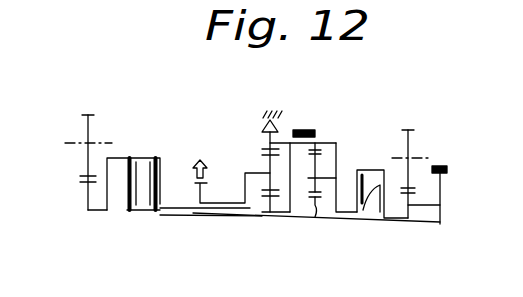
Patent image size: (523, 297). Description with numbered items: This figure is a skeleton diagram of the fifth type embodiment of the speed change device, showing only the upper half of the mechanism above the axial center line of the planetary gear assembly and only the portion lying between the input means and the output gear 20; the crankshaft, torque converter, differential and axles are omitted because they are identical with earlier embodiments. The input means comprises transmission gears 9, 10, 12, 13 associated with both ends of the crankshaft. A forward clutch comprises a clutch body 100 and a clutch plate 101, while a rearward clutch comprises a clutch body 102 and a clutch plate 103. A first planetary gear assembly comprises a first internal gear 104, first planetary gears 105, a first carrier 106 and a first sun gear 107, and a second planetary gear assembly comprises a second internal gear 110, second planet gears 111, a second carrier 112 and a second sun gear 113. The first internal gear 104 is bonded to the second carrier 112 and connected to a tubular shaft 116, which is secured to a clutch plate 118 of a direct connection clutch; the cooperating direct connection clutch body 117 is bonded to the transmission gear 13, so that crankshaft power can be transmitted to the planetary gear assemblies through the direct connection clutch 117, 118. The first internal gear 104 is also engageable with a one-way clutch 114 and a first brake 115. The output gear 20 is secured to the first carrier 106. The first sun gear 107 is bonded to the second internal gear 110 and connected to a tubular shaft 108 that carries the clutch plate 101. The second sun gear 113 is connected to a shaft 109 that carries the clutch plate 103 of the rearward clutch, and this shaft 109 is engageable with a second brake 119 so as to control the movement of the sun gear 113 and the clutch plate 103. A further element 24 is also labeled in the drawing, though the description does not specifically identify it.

The transmission gear 9 is at (84, 160).
The transmission gear 10 is at (84, 197).
The transmission gear 12 is at (415, 178).
The transmission gear 13 is at (440, 205).
The output gear 20 is at (202, 196).
The conductor 24 is at (403, 223).
The clutch body 100 is at (141, 192).
The clutch plate 101 is at (159, 213).
The clutch body 102 is at (122, 190).
The clutch plate 103 is at (126, 210).
The first internal gear 104 is at (268, 141).
The first planetary gears 105 is at (266, 147).
The first carrier 106 is at (263, 154).
The first sun gear 107 is at (266, 214).
The tubular shaft 108 is at (227, 222).
The shaft 109 is at (203, 217).
The second internal gear 110 is at (318, 141).
The second planet gears 111 is at (320, 158).
The second carrier 112 is at (327, 176).
The second sun gear 113 is at (316, 207).
The one-way clutch 114 is at (297, 108).
The first brake 115 is at (303, 131).
The tubular shaft 116 is at (347, 223).
The direct connection clutch body 117 is at (385, 223).
The clutch plate 118 is at (364, 223).
The second brake 119 is at (440, 166).